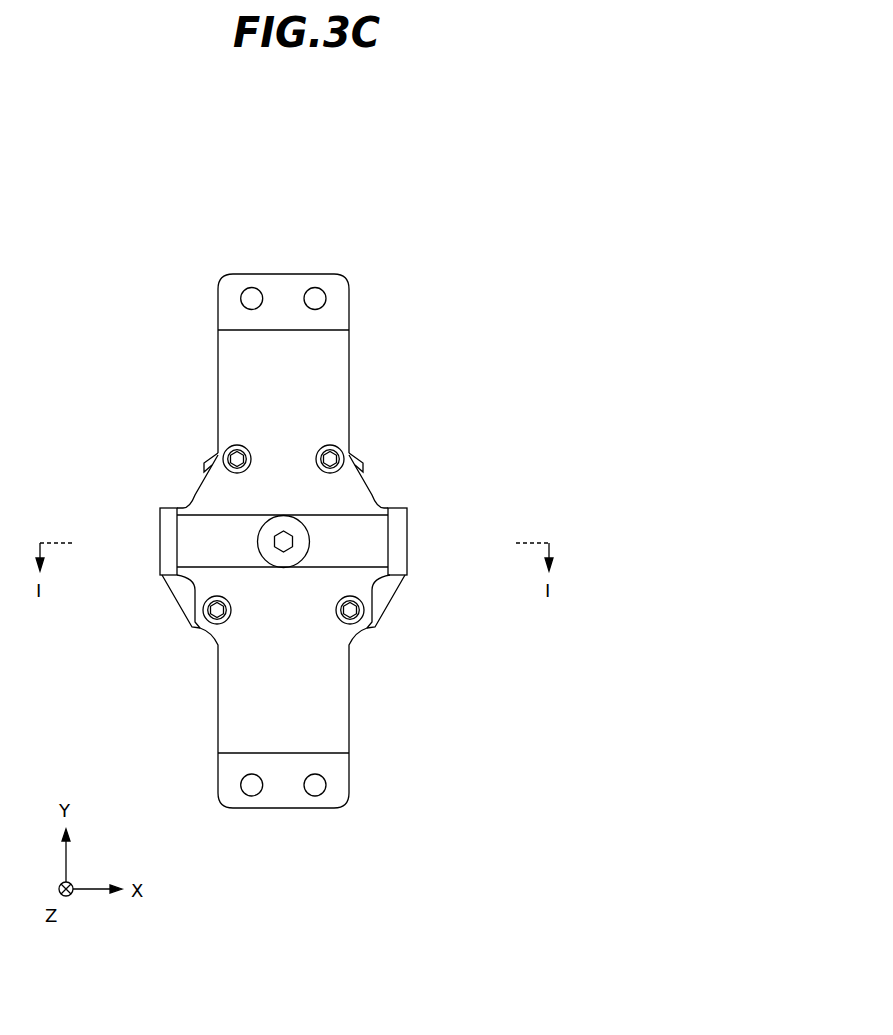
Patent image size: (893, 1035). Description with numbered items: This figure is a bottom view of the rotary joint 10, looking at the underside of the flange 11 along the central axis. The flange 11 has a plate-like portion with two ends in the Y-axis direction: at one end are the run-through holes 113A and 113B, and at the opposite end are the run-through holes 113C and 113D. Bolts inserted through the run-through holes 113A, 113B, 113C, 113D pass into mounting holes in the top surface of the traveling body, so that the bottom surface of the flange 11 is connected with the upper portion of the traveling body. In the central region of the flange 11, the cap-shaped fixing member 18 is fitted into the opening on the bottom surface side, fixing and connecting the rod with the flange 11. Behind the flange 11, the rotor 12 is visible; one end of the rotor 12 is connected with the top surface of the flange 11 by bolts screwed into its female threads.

The rotary joint 10 is at (406, 236).
The flange 11 is at (297, 377).
The rotor 12 is at (360, 462).
The fixing member 18 is at (312, 540).
The run-through hole 113A is at (313, 292).
The run-through hole 113B is at (250, 290).
The run-through hole 113C is at (313, 793).
The run-through hole 113D is at (250, 793).